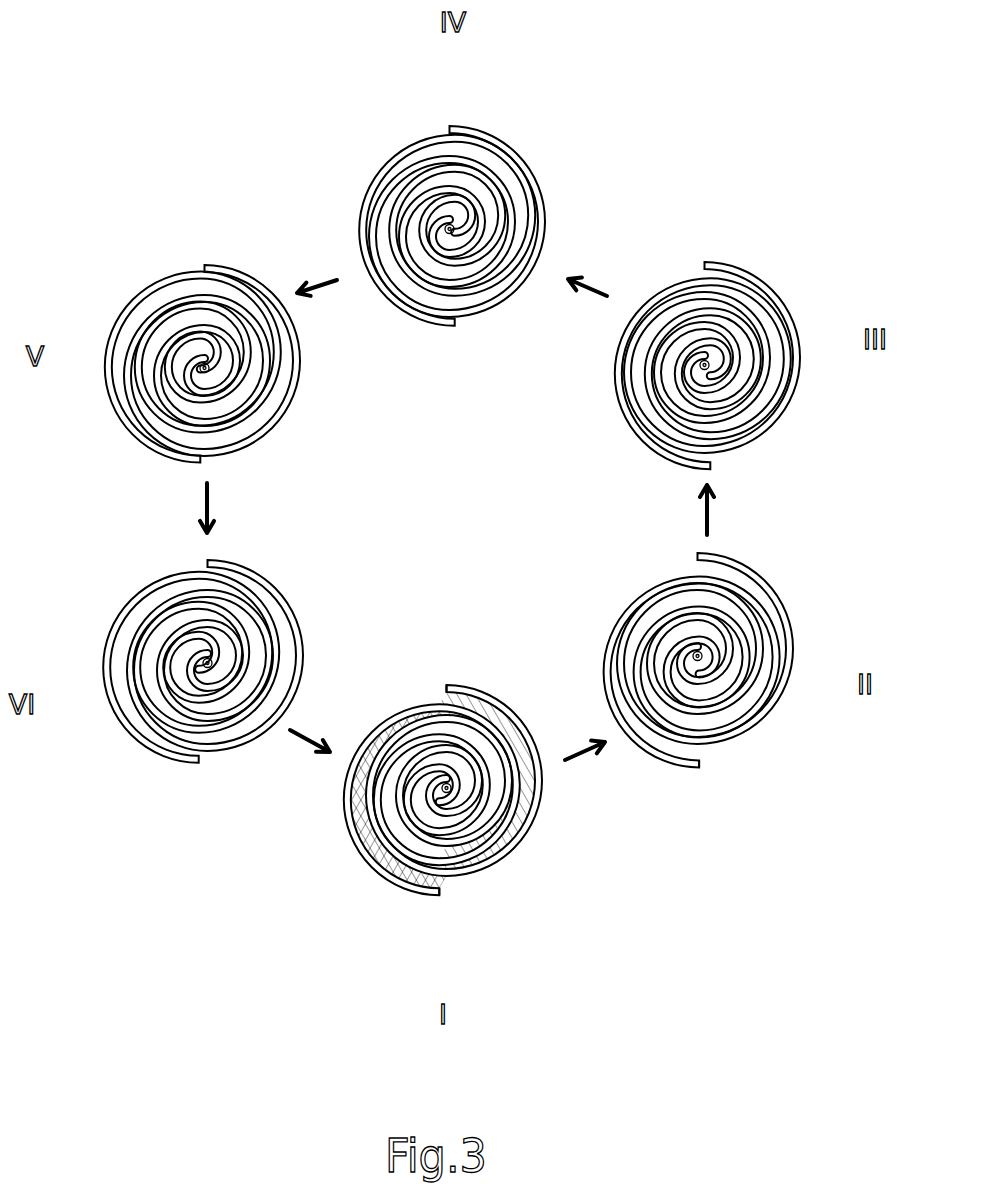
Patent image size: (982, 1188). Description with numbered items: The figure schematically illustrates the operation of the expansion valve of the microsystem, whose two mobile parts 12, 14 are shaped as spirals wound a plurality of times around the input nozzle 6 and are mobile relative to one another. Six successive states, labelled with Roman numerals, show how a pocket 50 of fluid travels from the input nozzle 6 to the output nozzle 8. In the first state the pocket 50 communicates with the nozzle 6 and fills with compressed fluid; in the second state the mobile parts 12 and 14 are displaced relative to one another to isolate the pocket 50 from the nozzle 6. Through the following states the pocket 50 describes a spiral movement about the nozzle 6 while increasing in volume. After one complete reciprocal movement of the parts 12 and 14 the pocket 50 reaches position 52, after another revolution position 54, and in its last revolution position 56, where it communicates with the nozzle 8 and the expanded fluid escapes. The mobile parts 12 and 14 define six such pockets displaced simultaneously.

The input nozzle 6 is at (448, 218).
The output nozzle 8 is at (438, 690).
The mobile part 12 is at (540, 167).
The mobile part 14 is at (370, 178).
The pocket of fluid 50 is at (452, 214).
The position of the pocket after one revolution 52 is at (505, 840).
The position of the pocket after a new revolution 54 is at (445, 860).
The final position of the pocket 56 is at (370, 849).